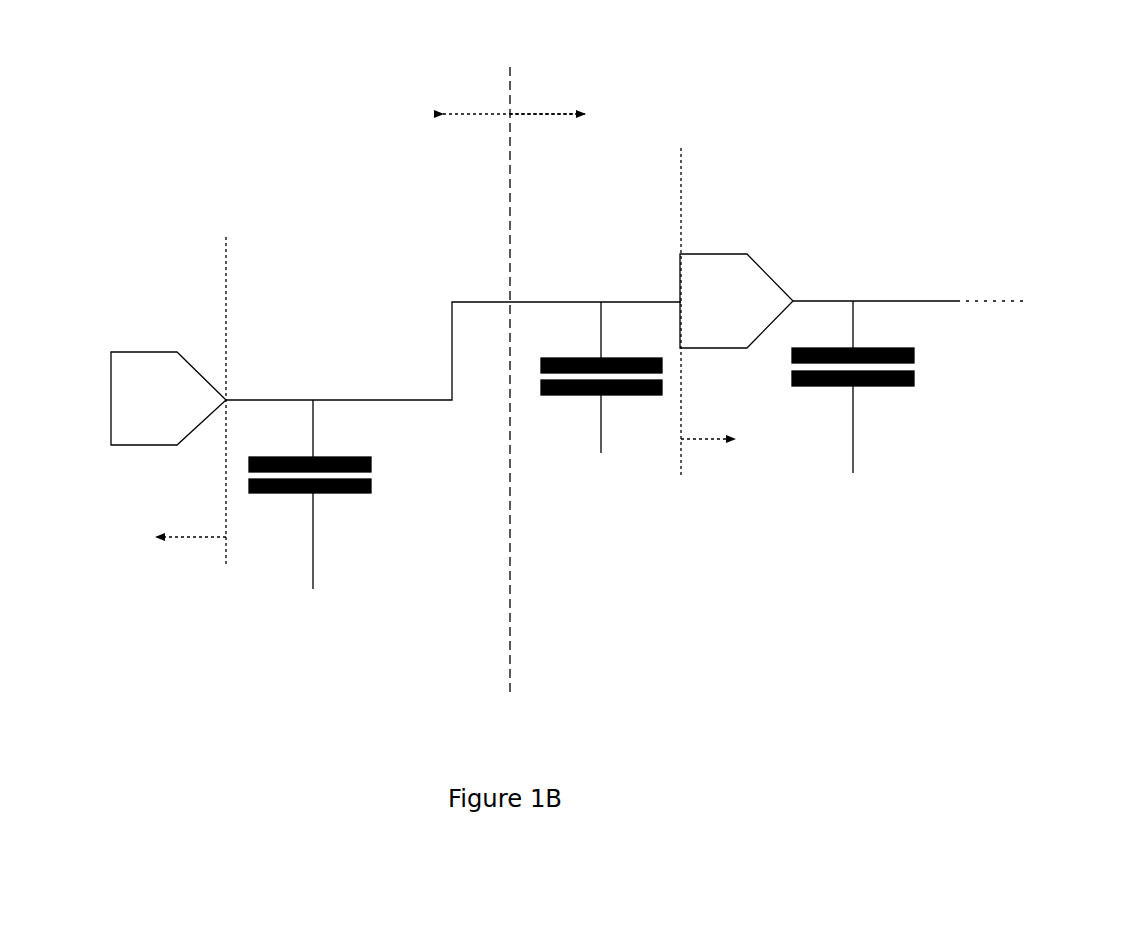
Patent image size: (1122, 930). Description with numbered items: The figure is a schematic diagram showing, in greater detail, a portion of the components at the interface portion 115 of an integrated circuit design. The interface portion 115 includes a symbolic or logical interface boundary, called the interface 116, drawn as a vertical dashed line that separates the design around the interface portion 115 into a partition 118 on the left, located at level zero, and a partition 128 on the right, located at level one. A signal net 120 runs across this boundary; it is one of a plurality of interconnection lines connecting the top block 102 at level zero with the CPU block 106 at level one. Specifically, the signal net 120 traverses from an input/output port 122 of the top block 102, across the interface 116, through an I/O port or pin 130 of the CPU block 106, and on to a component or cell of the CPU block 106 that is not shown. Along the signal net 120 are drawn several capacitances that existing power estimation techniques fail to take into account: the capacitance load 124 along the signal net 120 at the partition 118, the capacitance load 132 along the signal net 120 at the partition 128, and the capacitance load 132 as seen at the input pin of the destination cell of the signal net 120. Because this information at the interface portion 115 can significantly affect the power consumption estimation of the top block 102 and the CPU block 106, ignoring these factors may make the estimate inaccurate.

The top block 102 is at (180, 415).
The CPU block 106 is at (715, 317).
The interface portion 115 is at (937, 123).
The interface 116 is at (513, 362).
The partition 118 is at (452, 117).
The signal net 120 is at (453, 351).
The input/output (I/O) port 122 is at (152, 377).
The capacitance load 124 is at (338, 494).
The partition 128 is at (593, 117).
The I/O port (or pin) 130 is at (852, 279).
The capacitance load 132 is at (749, 387).